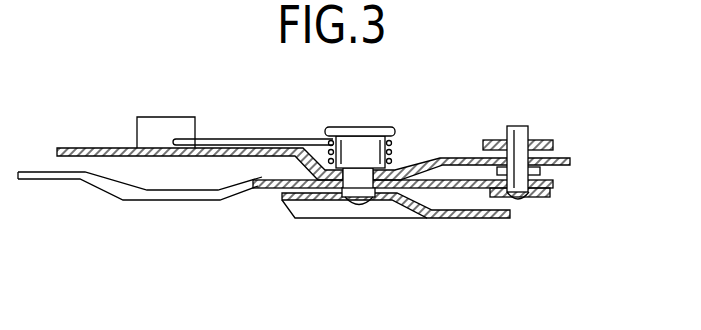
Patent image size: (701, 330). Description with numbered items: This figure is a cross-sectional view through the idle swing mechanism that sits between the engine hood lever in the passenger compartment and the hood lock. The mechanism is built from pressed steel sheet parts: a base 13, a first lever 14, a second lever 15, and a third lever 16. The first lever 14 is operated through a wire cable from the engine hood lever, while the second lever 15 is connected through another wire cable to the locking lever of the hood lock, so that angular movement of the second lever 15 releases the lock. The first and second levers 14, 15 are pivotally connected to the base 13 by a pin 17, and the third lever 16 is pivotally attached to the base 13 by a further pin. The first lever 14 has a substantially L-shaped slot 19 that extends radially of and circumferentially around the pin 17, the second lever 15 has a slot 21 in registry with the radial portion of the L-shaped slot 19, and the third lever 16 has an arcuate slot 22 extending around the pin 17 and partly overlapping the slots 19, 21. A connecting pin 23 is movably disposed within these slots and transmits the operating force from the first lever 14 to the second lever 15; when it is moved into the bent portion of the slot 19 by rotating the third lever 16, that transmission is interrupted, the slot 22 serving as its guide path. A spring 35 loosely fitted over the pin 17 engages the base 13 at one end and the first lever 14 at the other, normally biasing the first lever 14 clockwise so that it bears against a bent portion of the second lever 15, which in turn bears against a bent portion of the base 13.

The base 13 is at (440, 219).
The first lever 14 is at (252, 139).
The second lever 15 is at (155, 200).
The third lever 16 is at (553, 142).
The pin 17 is at (357, 140).
The L-shaped slot 19 is at (481, 189).
The slot 21 is at (460, 158).
The slot 22 is at (522, 126).
The connecting pin 23 is at (511, 126).
The spring 35 is at (220, 147).